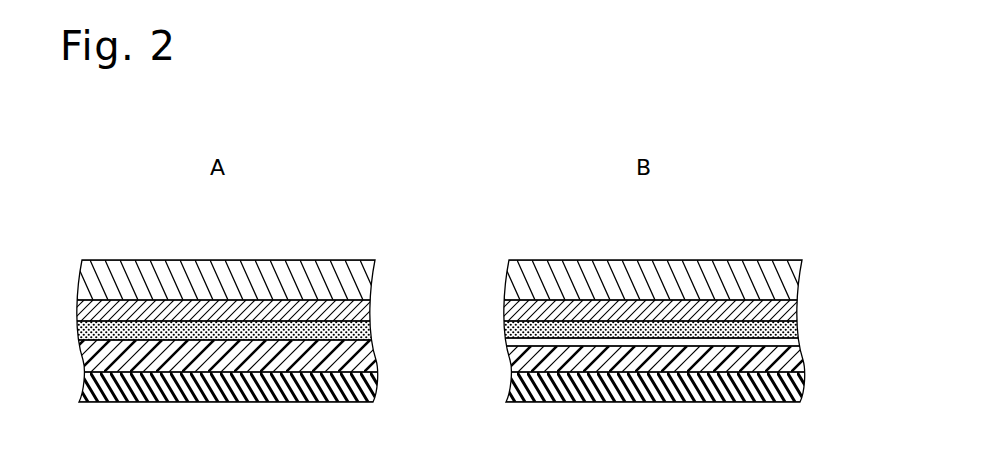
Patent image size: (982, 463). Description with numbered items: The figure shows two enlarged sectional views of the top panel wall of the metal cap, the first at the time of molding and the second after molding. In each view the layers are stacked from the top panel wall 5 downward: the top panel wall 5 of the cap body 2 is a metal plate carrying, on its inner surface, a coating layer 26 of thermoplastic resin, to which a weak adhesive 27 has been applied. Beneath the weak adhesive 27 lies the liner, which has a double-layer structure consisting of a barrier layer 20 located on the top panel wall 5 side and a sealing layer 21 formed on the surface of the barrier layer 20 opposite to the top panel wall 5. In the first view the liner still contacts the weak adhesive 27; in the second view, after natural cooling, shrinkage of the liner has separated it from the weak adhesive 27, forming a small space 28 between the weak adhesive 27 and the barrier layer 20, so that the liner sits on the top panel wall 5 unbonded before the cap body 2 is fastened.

The cap body 2 is at (376, 281).
The top panel wall 5 is at (297, 260).
The coating layer 26 is at (358, 314).
The weak adhesive 27 is at (372, 334).
The small space 28 is at (507, 344).
The barrier layer 20 is at (360, 355).
The sealing layer 21 is at (362, 389).